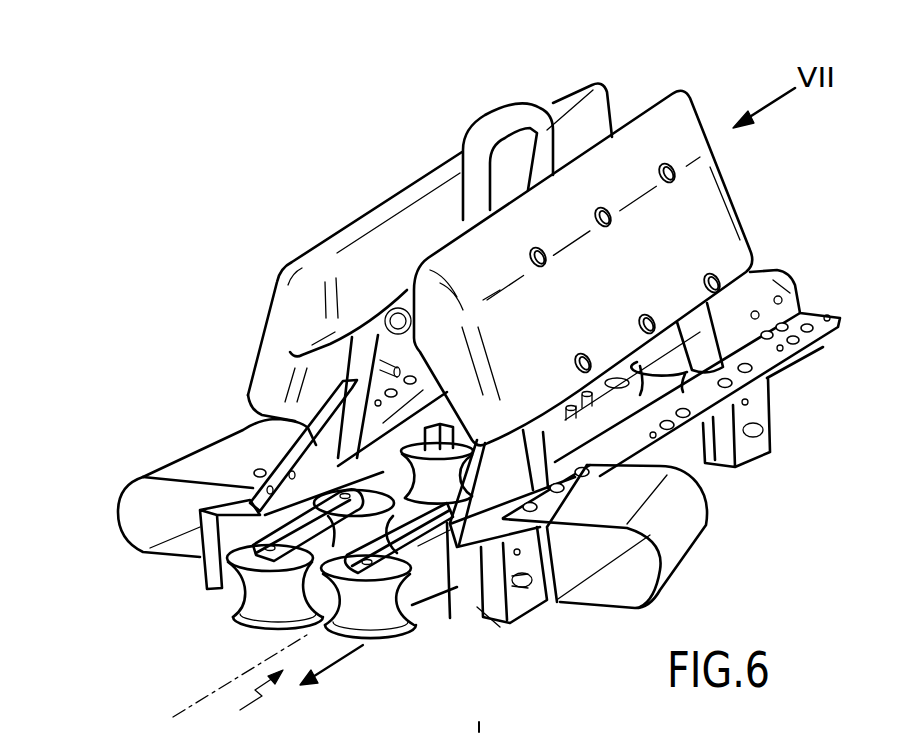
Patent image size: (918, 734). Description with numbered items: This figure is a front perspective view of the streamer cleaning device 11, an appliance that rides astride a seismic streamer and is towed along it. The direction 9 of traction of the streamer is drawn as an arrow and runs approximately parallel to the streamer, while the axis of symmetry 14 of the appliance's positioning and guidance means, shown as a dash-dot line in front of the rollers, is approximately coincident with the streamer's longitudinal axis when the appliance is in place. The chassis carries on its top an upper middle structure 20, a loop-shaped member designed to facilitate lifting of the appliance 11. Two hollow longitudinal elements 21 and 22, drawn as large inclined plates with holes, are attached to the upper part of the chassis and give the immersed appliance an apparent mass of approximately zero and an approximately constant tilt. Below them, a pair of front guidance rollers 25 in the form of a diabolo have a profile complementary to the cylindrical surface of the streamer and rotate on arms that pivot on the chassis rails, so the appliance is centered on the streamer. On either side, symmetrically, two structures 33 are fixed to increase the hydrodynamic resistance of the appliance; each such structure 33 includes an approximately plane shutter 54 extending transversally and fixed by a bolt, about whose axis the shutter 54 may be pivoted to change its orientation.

The direction of traction 9 is at (340, 652).
The streamer cleaning device 11 is at (249, 702).
The axis of symmetry 14 is at (217, 688).
The upper middle structure 20 is at (502, 123).
The hollow longitudinal element 21 is at (705, 130).
The hollow longitudinal element 22 is at (590, 113).
The front guidance rollers 25 is at (243, 623).
The structures for increasing hydrodynamic resistance 33 is at (118, 512).
The shutter 54 is at (583, 572).